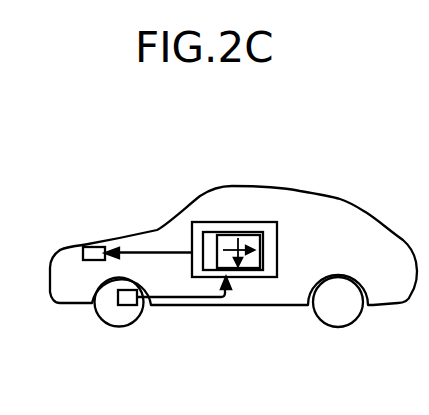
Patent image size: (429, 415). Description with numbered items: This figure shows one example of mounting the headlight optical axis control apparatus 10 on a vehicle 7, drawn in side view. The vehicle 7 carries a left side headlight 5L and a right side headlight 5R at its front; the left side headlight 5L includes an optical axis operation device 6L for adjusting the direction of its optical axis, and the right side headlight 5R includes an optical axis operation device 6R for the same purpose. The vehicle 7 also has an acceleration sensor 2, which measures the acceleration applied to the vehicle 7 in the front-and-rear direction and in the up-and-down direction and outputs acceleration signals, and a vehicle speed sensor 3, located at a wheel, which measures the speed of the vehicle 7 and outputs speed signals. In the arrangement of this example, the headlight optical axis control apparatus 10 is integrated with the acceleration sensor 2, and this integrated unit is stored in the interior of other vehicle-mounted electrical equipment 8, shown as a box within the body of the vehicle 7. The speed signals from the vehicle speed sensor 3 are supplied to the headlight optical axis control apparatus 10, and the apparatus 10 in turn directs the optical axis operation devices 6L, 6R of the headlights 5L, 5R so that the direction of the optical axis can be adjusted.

The vehicle 7 is at (367, 213).
The left side headlight 5L is at (46, 234).
The right side headlight 5R is at (68, 254).
The optical axis operation device 6L is at (109, 222).
The optical axis operation device 6R is at (95, 247).
The headlight optical axis control apparatus 10 is at (213, 232).
The other vehicle-mounted electrical equipment 8 is at (267, 228).
The acceleration sensor 2 is at (250, 236).
The vehicle speed sensor 3 is at (128, 305).